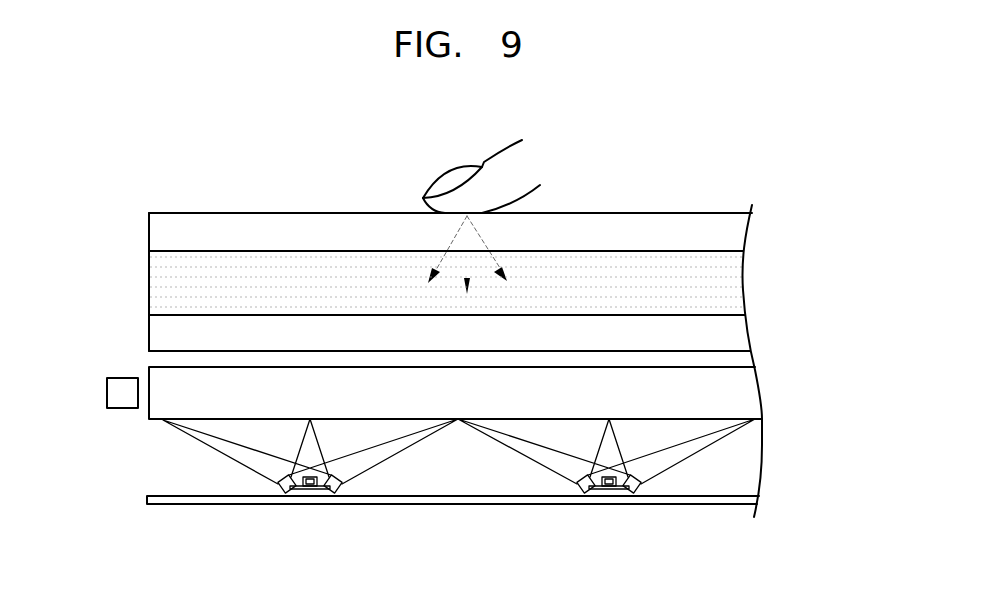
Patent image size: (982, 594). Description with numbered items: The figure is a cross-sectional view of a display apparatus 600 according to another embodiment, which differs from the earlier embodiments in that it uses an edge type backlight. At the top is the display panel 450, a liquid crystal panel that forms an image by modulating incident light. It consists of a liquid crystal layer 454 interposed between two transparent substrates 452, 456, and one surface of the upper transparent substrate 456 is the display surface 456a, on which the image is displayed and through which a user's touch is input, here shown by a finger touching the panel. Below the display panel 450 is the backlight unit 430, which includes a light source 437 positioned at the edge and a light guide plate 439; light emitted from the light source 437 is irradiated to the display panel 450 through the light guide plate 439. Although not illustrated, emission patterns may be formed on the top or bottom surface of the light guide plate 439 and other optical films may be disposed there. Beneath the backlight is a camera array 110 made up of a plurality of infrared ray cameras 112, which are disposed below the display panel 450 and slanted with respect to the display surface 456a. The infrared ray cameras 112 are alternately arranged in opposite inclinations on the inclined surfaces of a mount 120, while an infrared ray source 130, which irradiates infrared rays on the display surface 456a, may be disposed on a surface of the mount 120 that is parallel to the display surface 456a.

The display apparatus 600 is at (464, 334).
The display panel 450 is at (513, 244).
The transparent substrate 456 is at (482, 244).
The display surface 456a is at (663, 212).
The liquid crystal layer 454 is at (727, 282).
The transparent substrate 452 is at (482, 337).
The backlight unit 430 is at (407, 333).
The light source 437 is at (113, 381).
The light guide plate 439 is at (158, 375).
The camera array 110 is at (302, 498).
The infrared ray camera 112 is at (278, 490).
The mount 120 is at (309, 494).
The infrared ray source 130 is at (314, 489).